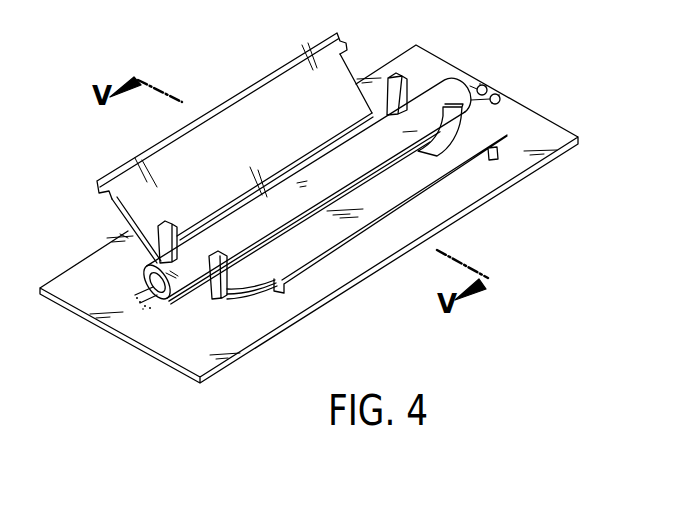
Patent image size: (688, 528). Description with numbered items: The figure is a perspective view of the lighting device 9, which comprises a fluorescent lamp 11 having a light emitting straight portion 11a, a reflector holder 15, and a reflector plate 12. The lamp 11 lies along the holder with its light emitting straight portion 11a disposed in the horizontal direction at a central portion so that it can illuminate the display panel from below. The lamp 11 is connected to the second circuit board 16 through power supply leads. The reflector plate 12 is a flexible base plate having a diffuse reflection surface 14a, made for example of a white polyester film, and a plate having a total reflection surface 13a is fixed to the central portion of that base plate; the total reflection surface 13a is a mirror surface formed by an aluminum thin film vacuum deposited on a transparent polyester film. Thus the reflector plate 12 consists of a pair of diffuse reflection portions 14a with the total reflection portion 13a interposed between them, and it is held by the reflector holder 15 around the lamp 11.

The lighting device 9 is at (299, 15).
The fluorescent lamp 11 is at (186, 270).
The light emitting straight portion 11a is at (331, 165).
The reflector plate 12 is at (229, 296).
The total reflection surface 13a is at (214, 230).
The diffuse reflection surface 14a is at (165, 152).
The reflector holder 15 is at (249, 298).
The second circuit board 16 is at (517, 113).